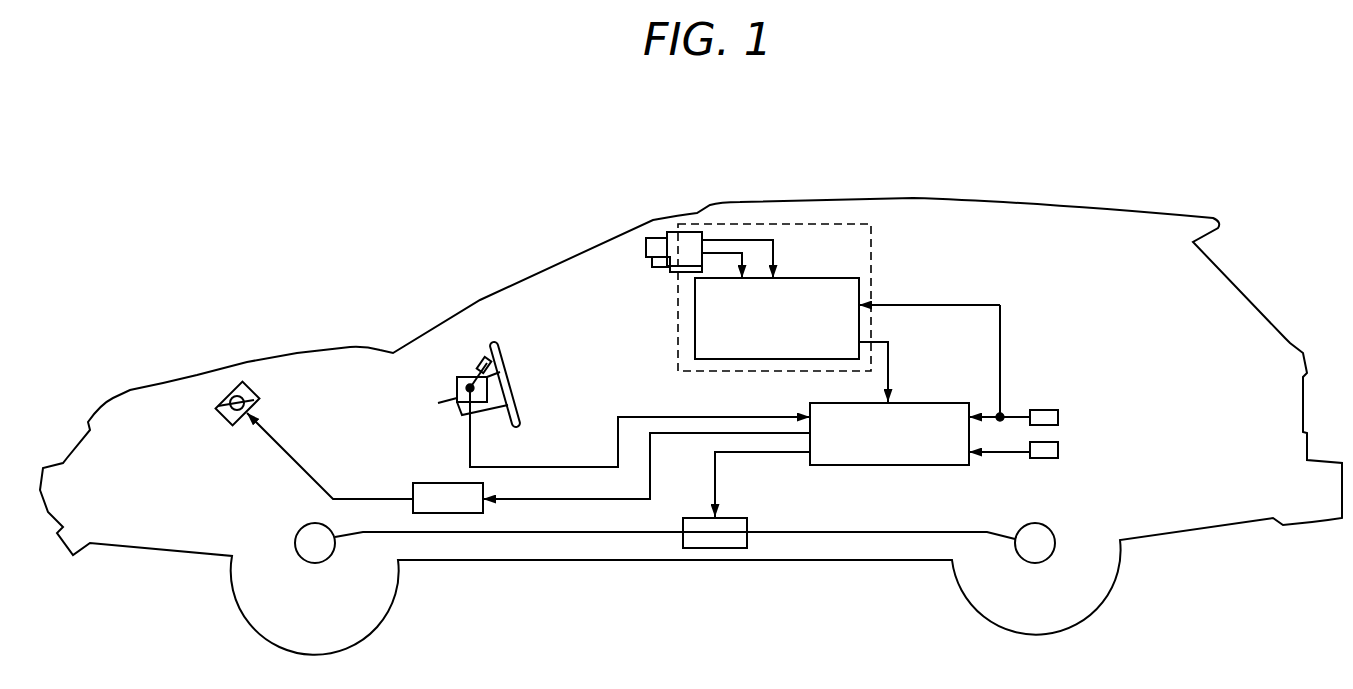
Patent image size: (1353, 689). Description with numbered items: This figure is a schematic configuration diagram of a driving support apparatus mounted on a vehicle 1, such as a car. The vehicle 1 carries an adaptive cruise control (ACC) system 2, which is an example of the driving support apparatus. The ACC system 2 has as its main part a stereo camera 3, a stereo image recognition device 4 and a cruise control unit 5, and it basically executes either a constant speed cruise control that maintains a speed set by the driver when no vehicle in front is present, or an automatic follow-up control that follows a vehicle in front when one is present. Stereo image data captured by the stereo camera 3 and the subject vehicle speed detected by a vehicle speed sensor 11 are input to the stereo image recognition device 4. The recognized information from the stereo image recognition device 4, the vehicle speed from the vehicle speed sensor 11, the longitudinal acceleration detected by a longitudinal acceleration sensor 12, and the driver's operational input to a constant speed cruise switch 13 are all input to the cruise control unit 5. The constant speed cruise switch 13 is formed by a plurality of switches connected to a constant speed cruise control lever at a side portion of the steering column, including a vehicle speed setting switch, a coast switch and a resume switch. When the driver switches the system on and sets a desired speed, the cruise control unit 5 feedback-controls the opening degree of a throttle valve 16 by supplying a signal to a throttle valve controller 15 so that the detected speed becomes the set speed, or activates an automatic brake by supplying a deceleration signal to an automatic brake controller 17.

The vehicle 1 is at (1051, 132).
The adaptive cruise control (ACC) system 2 is at (1053, 279).
The stereo camera 3 is at (648, 278).
The stereo image recognition device 4 is at (820, 278).
The cruise control unit 5 is at (930, 402).
The vehicle speed sensor 11 is at (1058, 417).
The longitudinal acceleration sensor 12 is at (1058, 450).
The constant speed cruise switch 13 is at (467, 377).
The throttle valve controller 15 is at (433, 483).
The throttle valve 16 is at (217, 420).
The automatic brake controller 17 is at (700, 517).